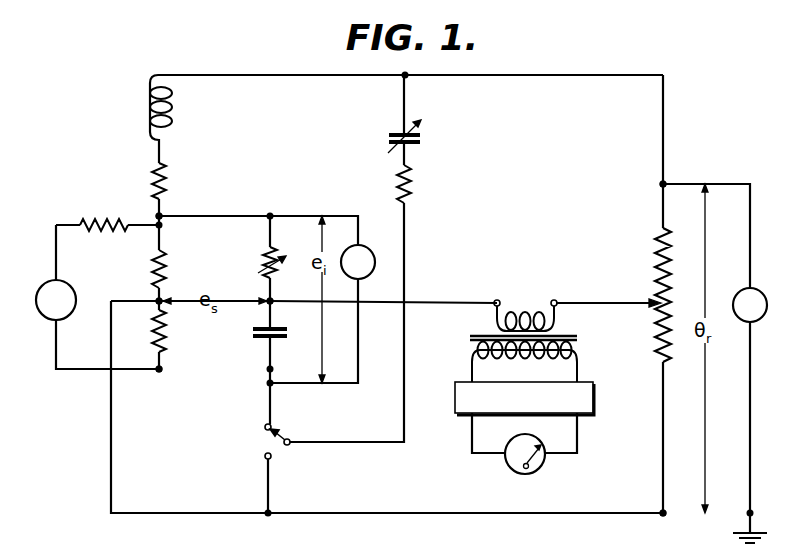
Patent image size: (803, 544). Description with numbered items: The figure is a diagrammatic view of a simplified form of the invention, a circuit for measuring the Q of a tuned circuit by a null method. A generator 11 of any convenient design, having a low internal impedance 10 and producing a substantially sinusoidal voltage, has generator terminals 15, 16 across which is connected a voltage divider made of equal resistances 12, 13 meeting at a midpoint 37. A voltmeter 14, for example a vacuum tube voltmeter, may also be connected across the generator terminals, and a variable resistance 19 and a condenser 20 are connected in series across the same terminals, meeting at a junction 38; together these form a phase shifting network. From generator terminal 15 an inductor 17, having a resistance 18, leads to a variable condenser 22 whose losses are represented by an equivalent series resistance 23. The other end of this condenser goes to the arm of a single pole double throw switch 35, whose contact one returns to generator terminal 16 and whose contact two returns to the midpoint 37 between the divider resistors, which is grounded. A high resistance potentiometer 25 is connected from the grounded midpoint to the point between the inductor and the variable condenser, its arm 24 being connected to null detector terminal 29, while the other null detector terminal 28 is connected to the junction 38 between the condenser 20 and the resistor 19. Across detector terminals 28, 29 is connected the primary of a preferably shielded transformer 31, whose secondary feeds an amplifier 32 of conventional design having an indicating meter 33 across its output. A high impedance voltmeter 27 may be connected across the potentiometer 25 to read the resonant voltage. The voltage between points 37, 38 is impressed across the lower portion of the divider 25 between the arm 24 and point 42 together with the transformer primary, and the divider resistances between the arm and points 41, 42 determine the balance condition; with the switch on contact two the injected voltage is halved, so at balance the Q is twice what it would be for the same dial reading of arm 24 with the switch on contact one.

The internal impedance 10 is at (117, 223).
The generator 11 is at (46, 286).
The resistance 12 is at (156, 273).
The resistance 13 is at (156, 340).
The voltmeter 14 is at (376, 264).
The generator terminal 15 is at (162, 219).
The generator terminal 16 is at (160, 373).
The inductor 17 is at (172, 108).
The resistance 18 is at (166, 181).
The variable resistance 19 is at (263, 262).
The condenser 20 is at (250, 338).
The variable condenser 22 is at (421, 130).
The equivalent series resistance 23 is at (410, 182).
The arm 24 is at (647, 299).
The high resistance potentiometer 25 is at (657, 257).
The high impedance voltmeter 27 is at (754, 287).
The null detector terminal 28 is at (497, 298).
The null detector terminal 29 is at (555, 300).
The transformer 31 is at (578, 338).
The amplifier 32 is at (596, 400).
The indicating meter 33 is at (543, 465).
The single pole double throw switch 35 is at (283, 437).
The midpoint 37 is at (162, 298).
The junction 38 is at (267, 298).
The point 41 is at (660, 186).
The point 42 is at (662, 512).